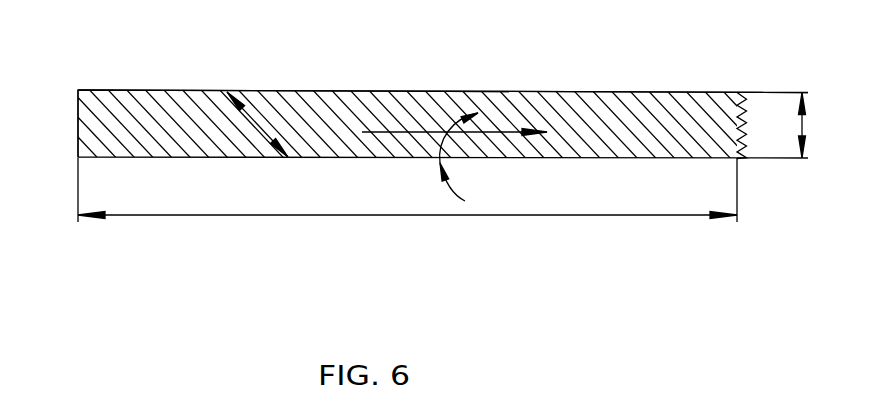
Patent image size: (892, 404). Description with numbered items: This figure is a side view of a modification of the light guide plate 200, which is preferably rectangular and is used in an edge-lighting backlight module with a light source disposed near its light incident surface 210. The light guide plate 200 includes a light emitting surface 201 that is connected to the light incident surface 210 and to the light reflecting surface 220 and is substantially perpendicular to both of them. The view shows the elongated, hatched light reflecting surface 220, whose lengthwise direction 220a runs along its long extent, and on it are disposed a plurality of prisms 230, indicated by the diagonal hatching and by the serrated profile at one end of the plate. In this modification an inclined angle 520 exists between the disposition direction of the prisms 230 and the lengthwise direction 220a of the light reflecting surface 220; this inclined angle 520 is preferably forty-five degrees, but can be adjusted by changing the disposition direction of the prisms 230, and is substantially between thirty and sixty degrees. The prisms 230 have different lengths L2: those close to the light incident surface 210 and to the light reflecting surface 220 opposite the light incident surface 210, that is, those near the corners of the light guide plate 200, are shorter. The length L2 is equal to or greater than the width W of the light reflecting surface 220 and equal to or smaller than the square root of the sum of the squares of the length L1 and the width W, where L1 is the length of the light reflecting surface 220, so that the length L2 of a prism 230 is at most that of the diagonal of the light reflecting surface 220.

The light guide plate 200 is at (40, 23).
The light emitting surface 201 is at (512, 91).
The light incident surface 210 is at (78, 132).
The light reflecting surface 220 is at (188, 107).
The lengthwise direction of the light reflecting surface 220a is at (392, 110).
The prisms 230 is at (325, 102).
The inclined angle 520 is at (446, 141).
The length of the light reflecting surface L1 is at (407, 200).
The length of the prism L2 is at (257, 126).
The width of the light reflecting surface W is at (811, 126).